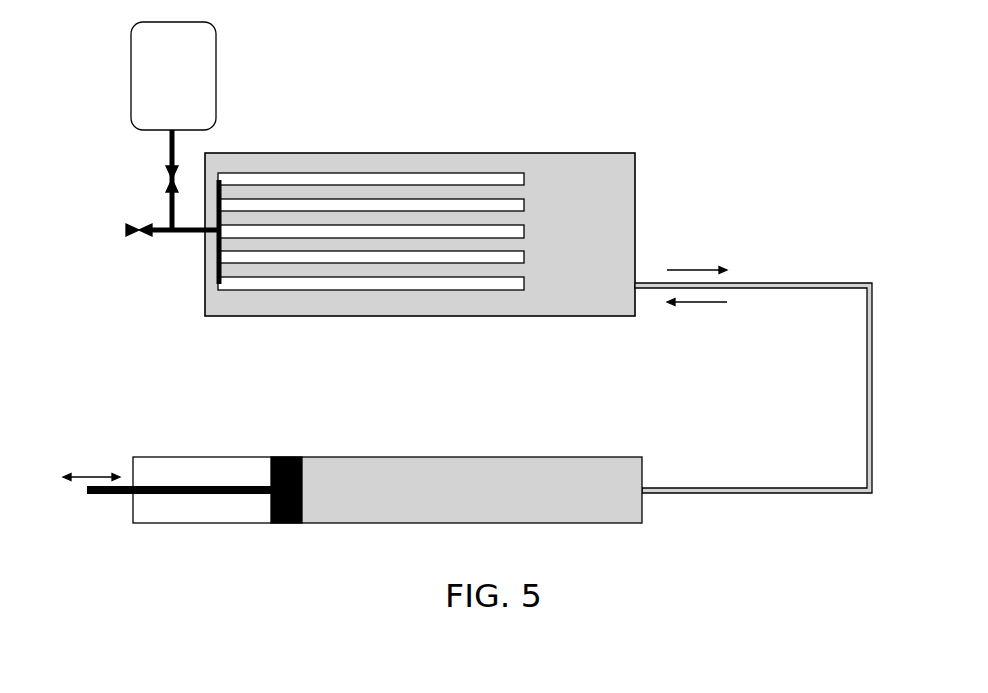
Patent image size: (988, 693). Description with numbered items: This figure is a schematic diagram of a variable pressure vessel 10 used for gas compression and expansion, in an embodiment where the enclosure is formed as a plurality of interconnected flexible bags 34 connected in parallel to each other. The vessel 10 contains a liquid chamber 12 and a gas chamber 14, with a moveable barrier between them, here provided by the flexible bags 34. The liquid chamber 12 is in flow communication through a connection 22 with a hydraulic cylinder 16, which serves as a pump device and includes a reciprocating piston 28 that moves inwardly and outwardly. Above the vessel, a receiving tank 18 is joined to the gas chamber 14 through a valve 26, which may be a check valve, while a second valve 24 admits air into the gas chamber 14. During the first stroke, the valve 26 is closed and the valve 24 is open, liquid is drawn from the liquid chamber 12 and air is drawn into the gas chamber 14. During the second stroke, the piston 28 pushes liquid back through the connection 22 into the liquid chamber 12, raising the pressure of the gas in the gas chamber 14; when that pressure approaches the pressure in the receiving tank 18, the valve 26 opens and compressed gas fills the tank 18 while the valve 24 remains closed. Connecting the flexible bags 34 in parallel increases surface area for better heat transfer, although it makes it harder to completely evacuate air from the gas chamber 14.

The variable pressure vessel 10 is at (454, 229).
The liquid chamber 12 is at (600, 193).
The gas chamber 14 is at (413, 181).
The hydraulic cylinder 16 is at (480, 457).
The receiving tank 18 is at (216, 70).
The connection 22 is at (800, 286).
The valve 24 is at (150, 238).
The valve 26 is at (170, 179).
The reciprocating piston 28 is at (271, 472).
The flexible bags 34 is at (310, 240).